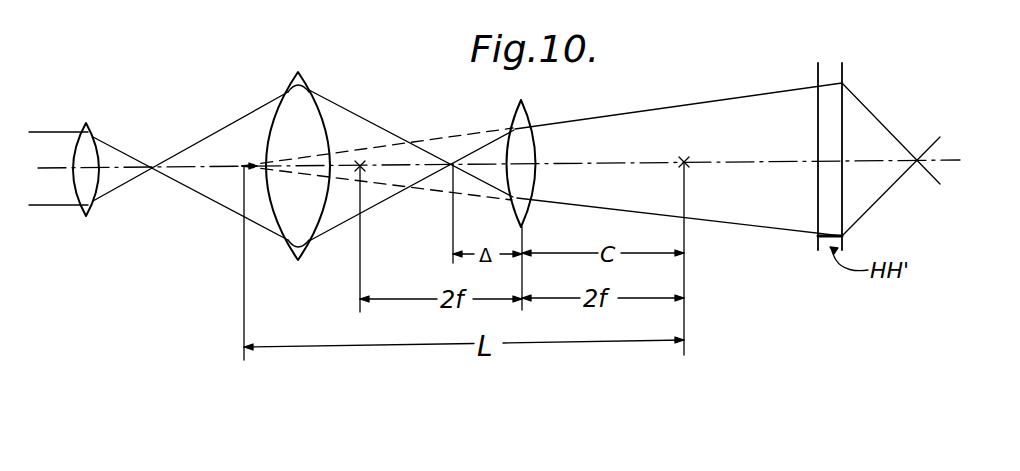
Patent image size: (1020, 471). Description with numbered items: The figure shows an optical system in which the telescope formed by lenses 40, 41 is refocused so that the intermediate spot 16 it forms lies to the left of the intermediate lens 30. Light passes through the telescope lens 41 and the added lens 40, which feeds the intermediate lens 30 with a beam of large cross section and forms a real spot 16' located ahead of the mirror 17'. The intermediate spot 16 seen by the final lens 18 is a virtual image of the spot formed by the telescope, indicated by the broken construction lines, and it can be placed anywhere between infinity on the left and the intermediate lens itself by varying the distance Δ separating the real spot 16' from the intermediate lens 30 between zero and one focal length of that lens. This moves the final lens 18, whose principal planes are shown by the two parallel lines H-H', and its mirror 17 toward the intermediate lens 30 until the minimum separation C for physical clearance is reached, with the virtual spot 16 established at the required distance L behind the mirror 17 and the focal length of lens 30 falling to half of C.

The telescope lens 41 is at (93, 210).
The intermediate spot 16 is at (226, 261).
The telescope lens 40 is at (317, 222).
The mirror 17' is at (379, 203).
The real intermediate spot 16' is at (467, 183).
The intermediate lens 30 is at (527, 143).
The mirror 17 is at (699, 214).
The final lens 18 is at (840, 85).